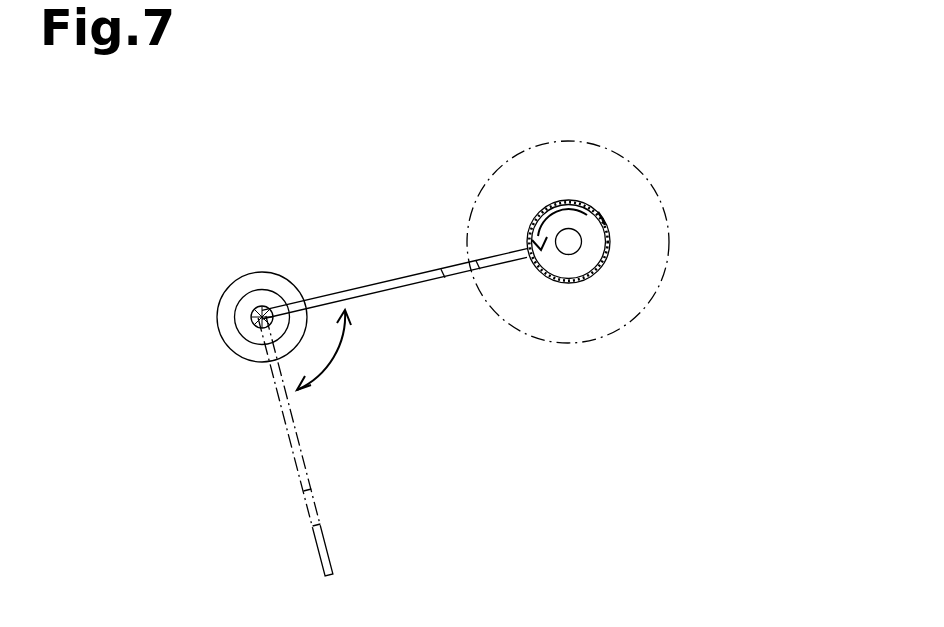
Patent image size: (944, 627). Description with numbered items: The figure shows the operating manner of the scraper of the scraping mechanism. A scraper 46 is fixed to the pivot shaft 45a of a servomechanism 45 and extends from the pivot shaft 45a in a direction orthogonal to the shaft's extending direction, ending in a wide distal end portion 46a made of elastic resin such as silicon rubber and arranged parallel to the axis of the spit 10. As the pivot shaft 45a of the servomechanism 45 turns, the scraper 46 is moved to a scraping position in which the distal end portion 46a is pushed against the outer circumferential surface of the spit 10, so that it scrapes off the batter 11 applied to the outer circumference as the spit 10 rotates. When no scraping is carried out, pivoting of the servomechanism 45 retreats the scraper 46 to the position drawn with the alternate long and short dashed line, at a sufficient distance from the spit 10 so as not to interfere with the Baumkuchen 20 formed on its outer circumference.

The spit 10 is at (552, 262).
The batter 11 is at (598, 212).
The Baumkuchen 20 is at (672, 240).
The servomechanism 45 is at (260, 277).
The pivot shaft 45a is at (247, 310).
The scraper 46 is at (373, 284).
The distal end portion 46a is at (495, 256).